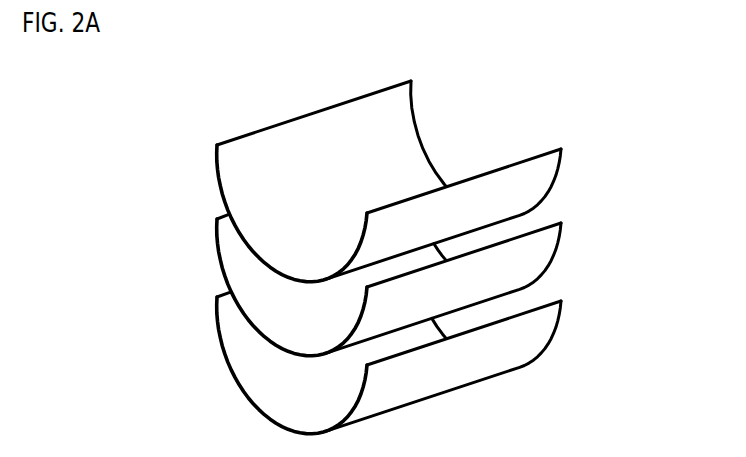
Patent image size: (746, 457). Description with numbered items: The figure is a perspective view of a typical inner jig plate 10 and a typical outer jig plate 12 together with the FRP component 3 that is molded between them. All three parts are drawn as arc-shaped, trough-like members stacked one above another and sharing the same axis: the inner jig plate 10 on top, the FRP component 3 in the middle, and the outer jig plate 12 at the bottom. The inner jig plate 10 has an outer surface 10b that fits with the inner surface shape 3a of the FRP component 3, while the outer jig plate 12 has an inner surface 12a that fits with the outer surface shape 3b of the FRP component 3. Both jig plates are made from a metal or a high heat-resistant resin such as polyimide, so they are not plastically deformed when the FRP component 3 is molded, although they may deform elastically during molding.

The inner jig plate 10 is at (437, 181).
The outer surface 10b is at (540, 185).
The FRP component 3 is at (372, 285).
The inner surface shape 3a is at (290, 323).
The outer surface shape 3b is at (540, 257).
The outer jig plate 12 is at (419, 350).
The inner surface 12a is at (262, 387).